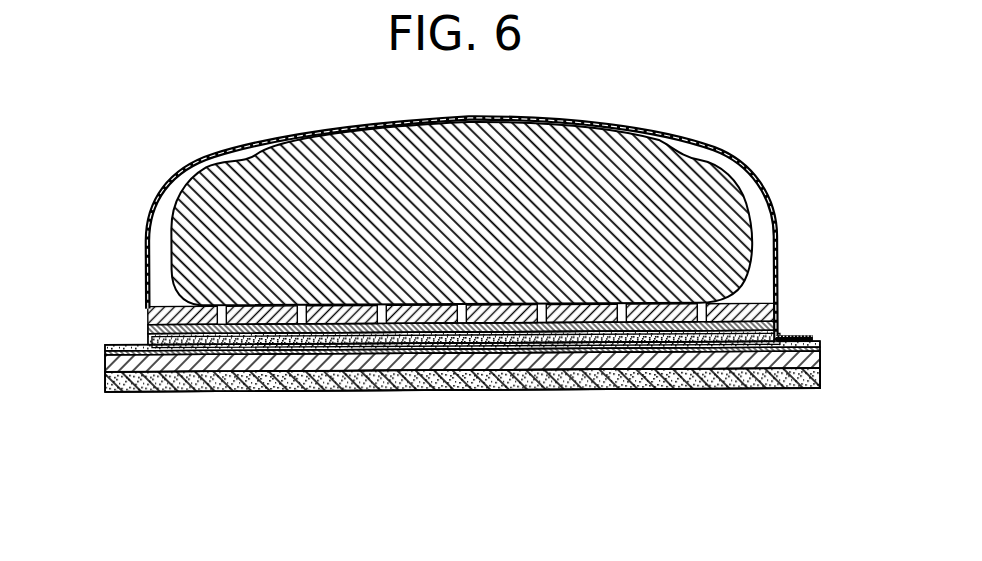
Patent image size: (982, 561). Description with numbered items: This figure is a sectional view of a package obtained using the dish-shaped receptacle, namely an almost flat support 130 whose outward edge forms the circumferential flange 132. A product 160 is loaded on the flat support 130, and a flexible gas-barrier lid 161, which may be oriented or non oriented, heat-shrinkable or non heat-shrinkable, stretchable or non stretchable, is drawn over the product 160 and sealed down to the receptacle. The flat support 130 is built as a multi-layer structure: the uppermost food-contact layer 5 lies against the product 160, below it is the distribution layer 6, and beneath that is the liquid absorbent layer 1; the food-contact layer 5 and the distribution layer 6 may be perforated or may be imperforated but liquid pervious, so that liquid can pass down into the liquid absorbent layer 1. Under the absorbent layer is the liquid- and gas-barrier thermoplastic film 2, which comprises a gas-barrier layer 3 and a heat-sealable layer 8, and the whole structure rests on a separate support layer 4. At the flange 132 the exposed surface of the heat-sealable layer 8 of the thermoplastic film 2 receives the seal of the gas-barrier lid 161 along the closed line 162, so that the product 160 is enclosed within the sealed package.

The liquid absorbent layer 1 is at (143, 343).
The liquid- and gas-barrier thermoplastic film 2 is at (446, 361).
The gas-barrier layer 3 is at (123, 373).
The support layer 4 is at (145, 383).
The food-contact layer 5 is at (441, 329).
The distribution layer 6 is at (160, 328).
The heat-sealable layer 8 is at (138, 347).
The flat support 130 is at (419, 319).
The flange 132 is at (800, 322).
The product 160 is at (537, 163).
The gas-barrier lid 161 is at (655, 139).
The closed line 162 is at (810, 338).